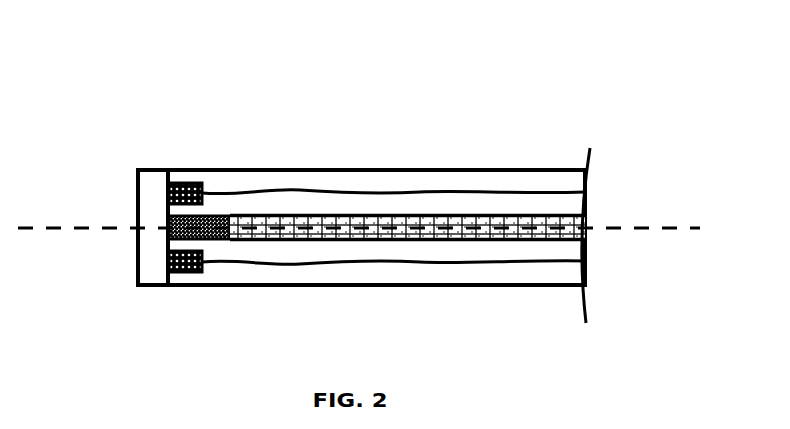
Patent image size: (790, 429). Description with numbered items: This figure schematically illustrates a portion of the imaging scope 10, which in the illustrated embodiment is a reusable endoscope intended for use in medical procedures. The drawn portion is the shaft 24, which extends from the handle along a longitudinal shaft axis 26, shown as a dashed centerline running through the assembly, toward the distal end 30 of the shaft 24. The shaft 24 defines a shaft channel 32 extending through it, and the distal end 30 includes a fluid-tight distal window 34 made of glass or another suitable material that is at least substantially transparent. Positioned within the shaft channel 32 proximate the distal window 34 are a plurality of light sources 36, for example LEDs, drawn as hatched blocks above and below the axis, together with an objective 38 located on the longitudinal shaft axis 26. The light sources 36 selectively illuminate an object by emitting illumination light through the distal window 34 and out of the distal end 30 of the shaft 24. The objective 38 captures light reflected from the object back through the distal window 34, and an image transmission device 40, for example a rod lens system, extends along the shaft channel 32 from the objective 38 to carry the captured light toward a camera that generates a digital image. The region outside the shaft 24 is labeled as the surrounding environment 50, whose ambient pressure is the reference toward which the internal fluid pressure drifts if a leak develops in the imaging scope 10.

The imaging scope 10 is at (364, 86).
The shaft 24 is at (331, 168).
The longitudinal shaft axis 26 is at (662, 226).
The distal end 30 is at (155, 143).
The shaft channel 32 is at (556, 183).
The distal window 34 is at (149, 273).
The light sources 36 is at (188, 170).
The objective 38 is at (221, 214).
The image transmission device 40 is at (386, 214).
The surrounding environment 50 is at (469, 74).